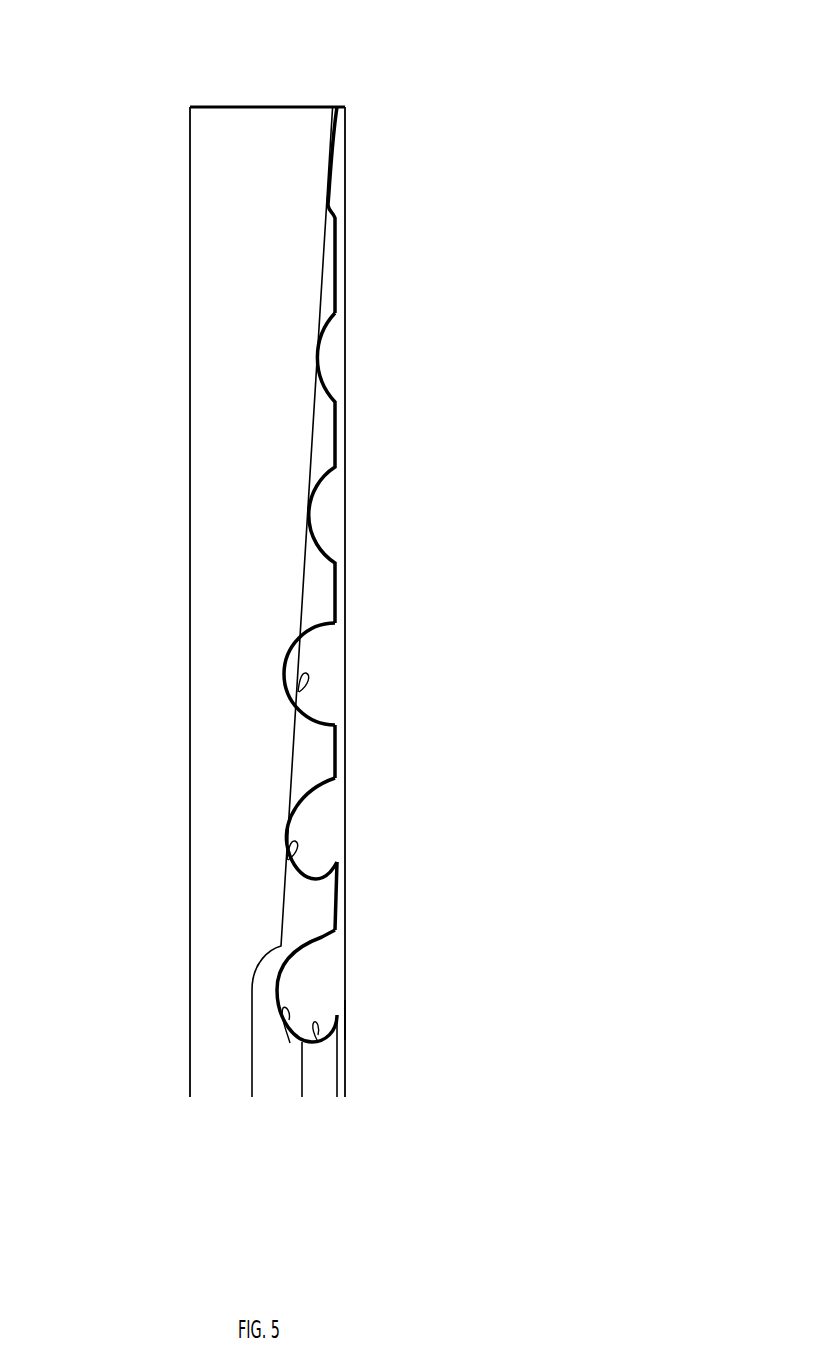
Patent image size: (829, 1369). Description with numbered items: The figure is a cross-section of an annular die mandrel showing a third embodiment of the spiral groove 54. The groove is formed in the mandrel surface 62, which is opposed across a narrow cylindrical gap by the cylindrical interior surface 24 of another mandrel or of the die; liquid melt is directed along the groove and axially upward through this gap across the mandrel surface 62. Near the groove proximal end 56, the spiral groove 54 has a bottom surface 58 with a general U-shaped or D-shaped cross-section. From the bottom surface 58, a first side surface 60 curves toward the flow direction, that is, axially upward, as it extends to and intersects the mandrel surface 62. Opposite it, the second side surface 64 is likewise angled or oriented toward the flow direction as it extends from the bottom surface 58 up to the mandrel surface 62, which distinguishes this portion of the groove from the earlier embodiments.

The cylindrical interior surface 24 is at (342, 210).
The spiral groove 54 is at (352, 663).
The groove proximal end 56 is at (354, 1022).
The bottom surface 58 is at (298, 692).
The first side surface 60 is at (320, 718).
The mandrel surface 62 is at (337, 107).
The second side surface 64 is at (340, 648).